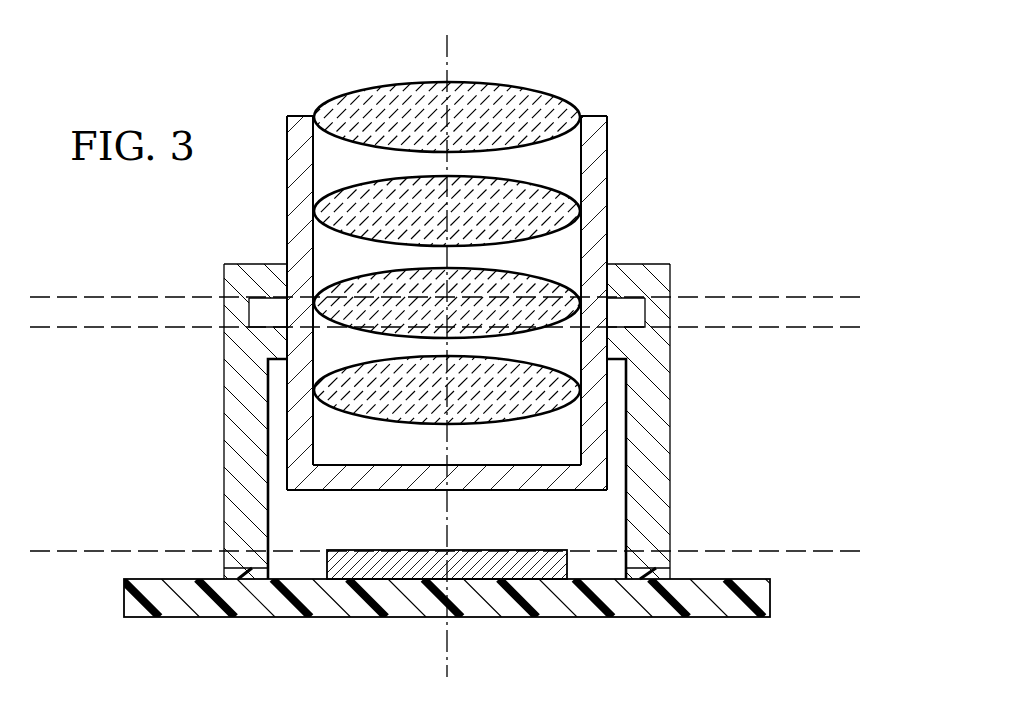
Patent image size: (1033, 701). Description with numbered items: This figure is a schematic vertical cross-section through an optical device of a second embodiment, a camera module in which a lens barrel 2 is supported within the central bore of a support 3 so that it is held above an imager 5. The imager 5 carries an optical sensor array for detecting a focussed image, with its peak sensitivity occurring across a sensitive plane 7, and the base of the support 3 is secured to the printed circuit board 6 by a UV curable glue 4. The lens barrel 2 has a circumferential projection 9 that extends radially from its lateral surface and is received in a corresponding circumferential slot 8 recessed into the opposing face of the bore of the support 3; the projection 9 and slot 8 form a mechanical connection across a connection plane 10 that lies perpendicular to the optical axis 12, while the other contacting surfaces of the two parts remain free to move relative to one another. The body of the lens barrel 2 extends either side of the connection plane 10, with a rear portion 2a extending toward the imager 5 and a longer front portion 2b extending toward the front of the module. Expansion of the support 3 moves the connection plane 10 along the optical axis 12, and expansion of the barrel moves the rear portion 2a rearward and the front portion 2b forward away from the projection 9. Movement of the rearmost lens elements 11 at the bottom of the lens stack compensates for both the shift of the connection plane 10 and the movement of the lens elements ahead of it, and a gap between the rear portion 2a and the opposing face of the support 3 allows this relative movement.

The lens barrel 2 is at (603, 175).
The rear portion 2a is at (598, 457).
The front portion 2b is at (603, 145).
The support 3 is at (660, 378).
The glue 4 is at (656, 576).
The imager 5 is at (549, 575).
The printed circuit board 6 is at (168, 618).
The sensitive plane 7 is at (121, 550).
The circumferential slot 8 is at (264, 328).
The circumferential projection 9 is at (277, 303).
The connection plane 10 is at (120, 312).
The rearmost lens elements 11 is at (332, 405).
The optical axis 12 is at (451, 52).